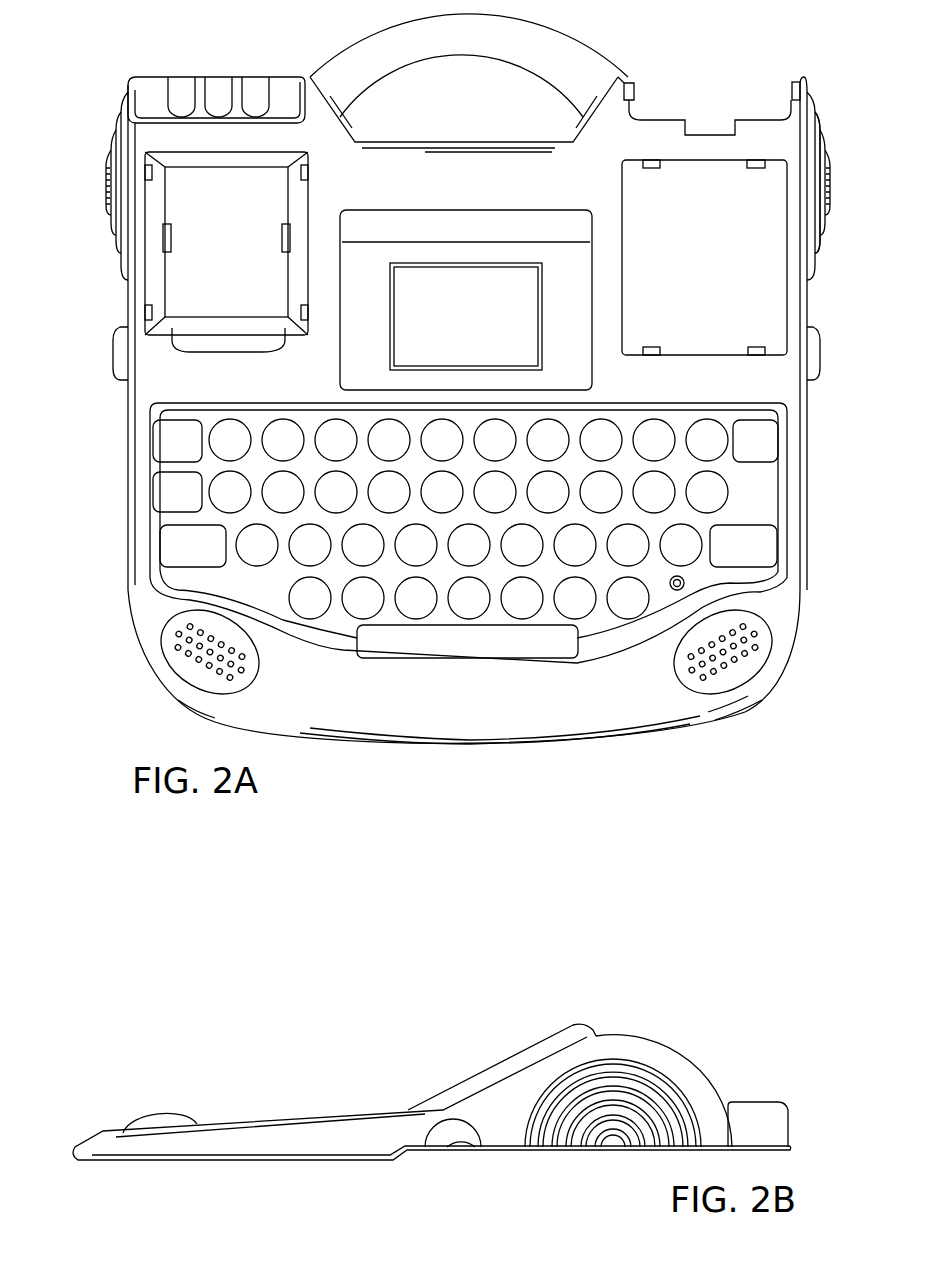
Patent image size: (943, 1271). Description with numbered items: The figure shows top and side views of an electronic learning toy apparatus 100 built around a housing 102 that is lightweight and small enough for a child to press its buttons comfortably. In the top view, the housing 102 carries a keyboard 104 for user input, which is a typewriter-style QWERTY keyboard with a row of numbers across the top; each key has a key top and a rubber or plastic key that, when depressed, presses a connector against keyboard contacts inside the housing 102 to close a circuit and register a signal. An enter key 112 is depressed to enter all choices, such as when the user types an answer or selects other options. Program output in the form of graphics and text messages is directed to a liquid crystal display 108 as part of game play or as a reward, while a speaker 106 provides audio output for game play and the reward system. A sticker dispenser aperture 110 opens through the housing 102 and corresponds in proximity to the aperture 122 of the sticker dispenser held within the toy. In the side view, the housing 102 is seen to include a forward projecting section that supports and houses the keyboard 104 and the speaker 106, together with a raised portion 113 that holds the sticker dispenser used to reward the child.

In FIG. 2A, the learning toy apparatus 100 is at (844, 118).
In FIG. 2A, the housing 102 is at (797, 573).
In FIG. 2B, the housing 102 is at (312, 1160).
In FIG. 2A, the keyboard 104 is at (508, 533).
In FIG. 2A, the speaker 106 is at (770, 635).
In FIG. 2B, the speaker 106 is at (163, 1115).
In FIG. 2A, the liquid crystal display 108 is at (527, 222).
In FIG. 2A, the sticker dispenser aperture 110 is at (282, 208).
In FIG. 2A, the enter key 112 is at (755, 530).
In FIG. 2A, the raised portion 113 is at (830, 183).
In FIG. 2B, the raised portion 113 is at (683, 1093).
In FIG. 2A, the aperture 122 is at (270, 333).